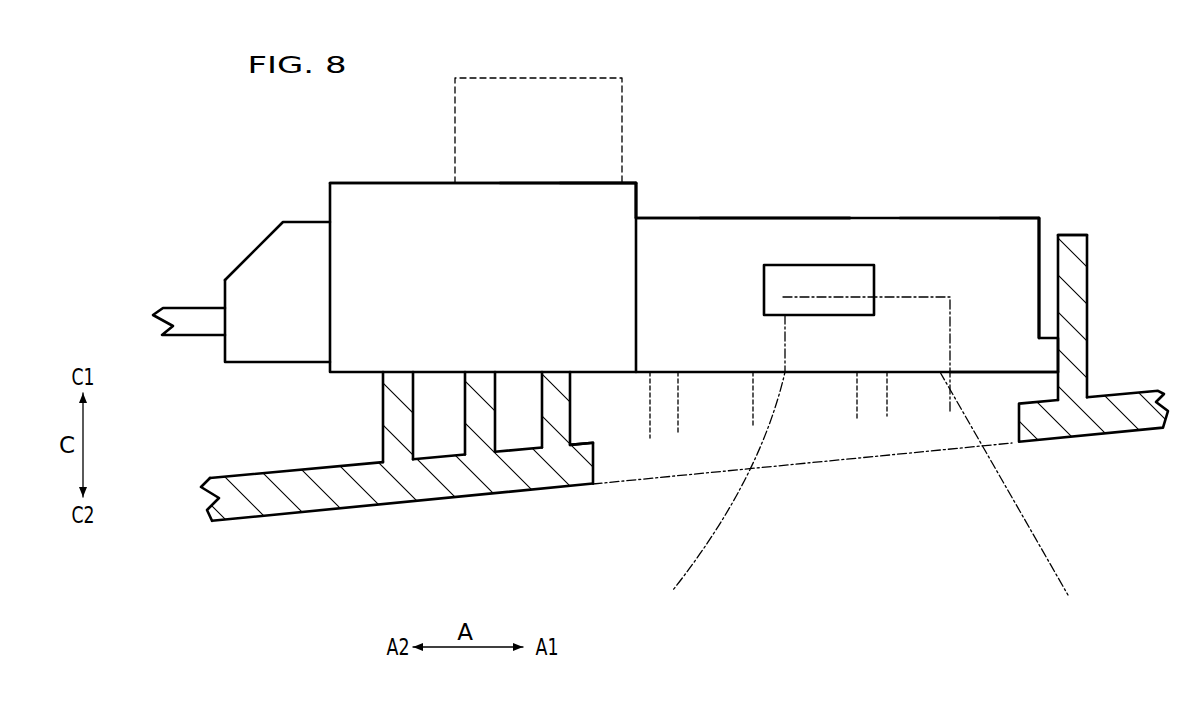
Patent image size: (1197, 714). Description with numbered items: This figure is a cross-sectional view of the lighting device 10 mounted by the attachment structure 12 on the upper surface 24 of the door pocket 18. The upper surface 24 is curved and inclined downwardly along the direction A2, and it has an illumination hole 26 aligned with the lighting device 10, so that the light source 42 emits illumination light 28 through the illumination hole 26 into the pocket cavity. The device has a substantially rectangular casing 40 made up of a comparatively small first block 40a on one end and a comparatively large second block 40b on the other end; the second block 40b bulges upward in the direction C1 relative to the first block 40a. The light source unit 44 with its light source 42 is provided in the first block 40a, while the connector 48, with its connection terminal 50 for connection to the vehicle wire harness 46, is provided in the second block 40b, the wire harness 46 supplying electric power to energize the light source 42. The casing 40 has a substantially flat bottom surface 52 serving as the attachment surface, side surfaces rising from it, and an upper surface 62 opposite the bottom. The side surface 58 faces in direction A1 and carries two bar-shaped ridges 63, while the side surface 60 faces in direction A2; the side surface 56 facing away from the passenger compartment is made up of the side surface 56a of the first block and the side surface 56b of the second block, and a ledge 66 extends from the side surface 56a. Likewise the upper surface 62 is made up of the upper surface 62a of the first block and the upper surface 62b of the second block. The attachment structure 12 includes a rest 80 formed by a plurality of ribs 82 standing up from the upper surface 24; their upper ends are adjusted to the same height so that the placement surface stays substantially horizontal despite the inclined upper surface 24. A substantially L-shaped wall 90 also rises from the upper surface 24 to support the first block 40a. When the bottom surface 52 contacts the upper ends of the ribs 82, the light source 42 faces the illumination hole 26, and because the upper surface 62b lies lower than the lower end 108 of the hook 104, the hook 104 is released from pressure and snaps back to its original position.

The lighting device 10 is at (413, 152).
The attachment structure 12 is at (979, 380).
The door pocket 18 is at (1126, 425).
The upper surface 24 is at (228, 477).
The illumination hole 26 is at (885, 450).
The illumination light 28 is at (1068, 553).
The casing 40 is at (843, 216).
The first block 40a is at (1011, 224).
The second block 40b is at (373, 195).
The light source 42 is at (922, 297).
The light source unit 44 is at (1009, 252).
The wire harness 46 is at (192, 315).
The connector 48 is at (483, 249).
The connection terminal 50 is at (255, 250).
The bottom surface 52 is at (1030, 376).
The side surface 56 is at (586, 462).
The side surface of the first block 56a is at (708, 353).
The side surface of the second block 56b is at (594, 337).
The side surface 58 is at (1042, 265).
The side surface 60 is at (328, 325).
The upper surface 62 is at (652, 128).
The upper surface of the first block 62a is at (770, 216).
The upper surface of the second block 62b is at (588, 177).
The bar-shaped ridges 63 is at (1057, 215).
The ledge 66 is at (838, 275).
The rest 80 is at (372, 404).
The ribs 82 is at (382, 435).
The wall 90 is at (1078, 308).
The hook 104 is at (497, 78).
The lower end 108 is at (537, 190).